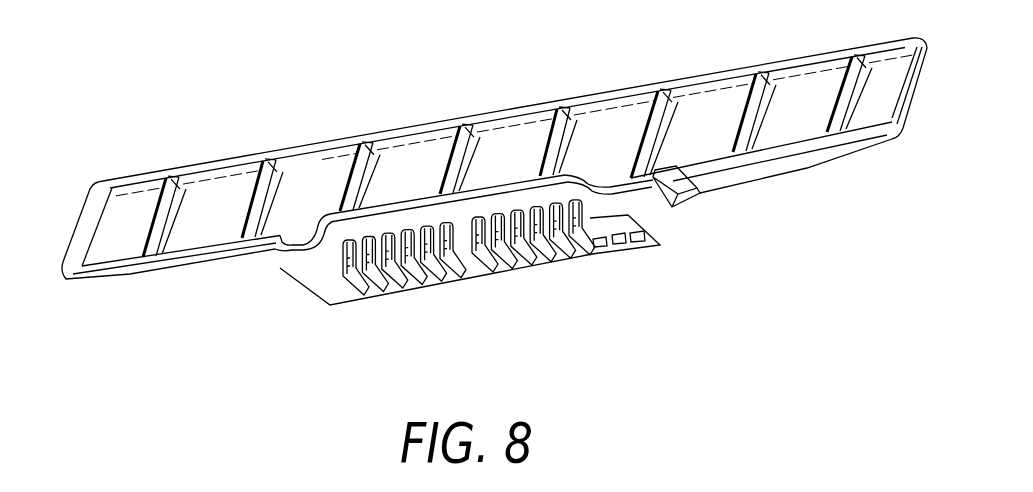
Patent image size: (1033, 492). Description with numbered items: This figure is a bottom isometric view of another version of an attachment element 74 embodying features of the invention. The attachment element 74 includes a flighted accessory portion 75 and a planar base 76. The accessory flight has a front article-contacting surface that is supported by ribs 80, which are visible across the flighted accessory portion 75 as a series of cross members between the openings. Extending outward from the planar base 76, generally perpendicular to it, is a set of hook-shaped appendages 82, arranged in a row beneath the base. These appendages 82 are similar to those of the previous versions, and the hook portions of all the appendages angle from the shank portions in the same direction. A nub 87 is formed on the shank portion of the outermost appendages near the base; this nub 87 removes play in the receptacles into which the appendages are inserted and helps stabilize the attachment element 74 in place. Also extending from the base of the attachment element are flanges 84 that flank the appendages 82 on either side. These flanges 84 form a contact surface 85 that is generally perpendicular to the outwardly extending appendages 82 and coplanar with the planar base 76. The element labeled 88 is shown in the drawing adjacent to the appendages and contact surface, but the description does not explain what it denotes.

The attachment element 74 is at (266, 101).
The flighted accessory portion 75 is at (700, 117).
The planar base 76 is at (407, 193).
The ribs 80 is at (567, 134).
The hook-shaped appendages 82 is at (597, 253).
The flange 84 is at (667, 210).
The contact surface 85 is at (670, 229).
The nub 87 is at (340, 248).
The locating tabs 88 is at (638, 240).